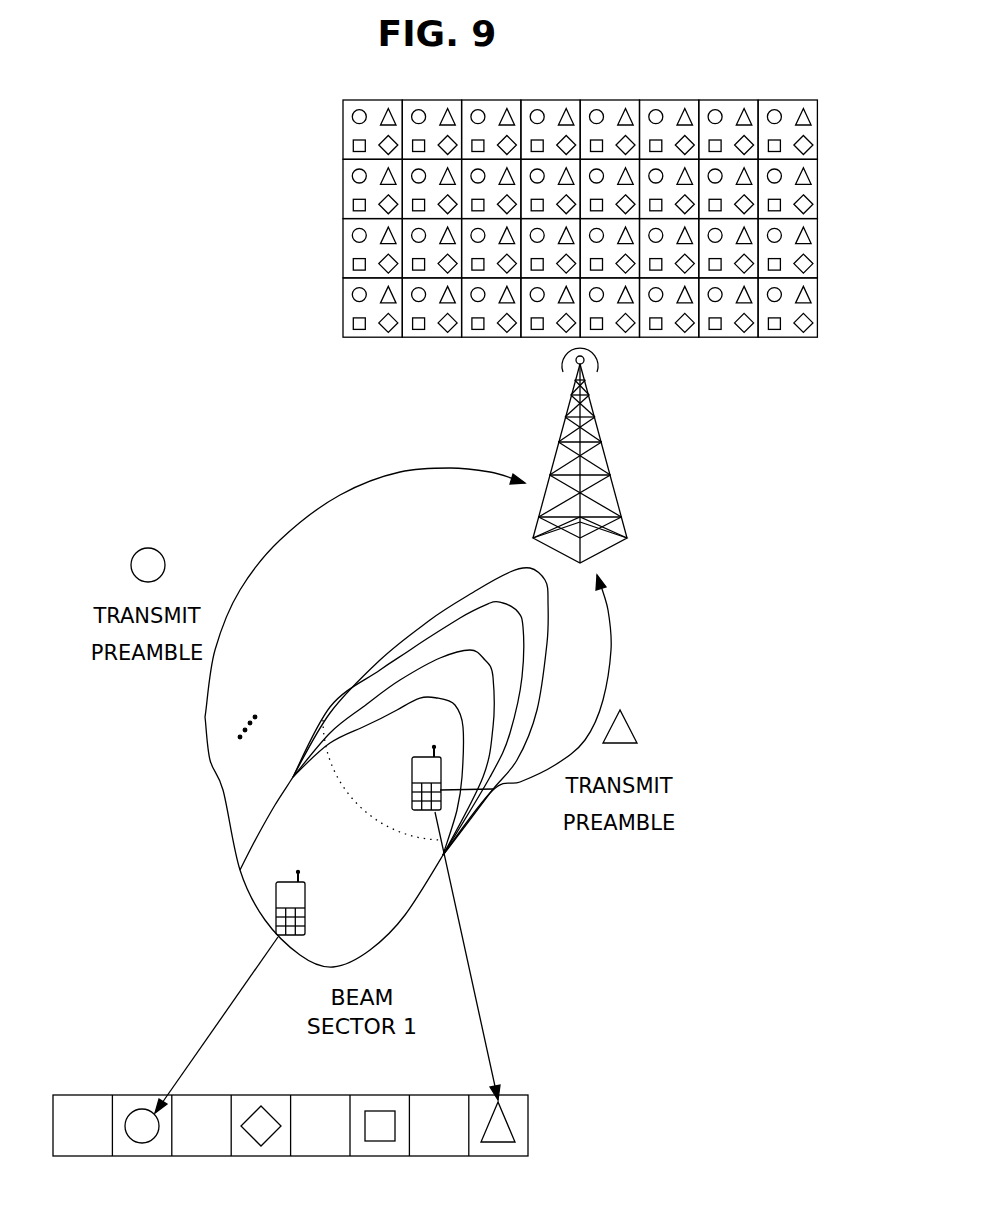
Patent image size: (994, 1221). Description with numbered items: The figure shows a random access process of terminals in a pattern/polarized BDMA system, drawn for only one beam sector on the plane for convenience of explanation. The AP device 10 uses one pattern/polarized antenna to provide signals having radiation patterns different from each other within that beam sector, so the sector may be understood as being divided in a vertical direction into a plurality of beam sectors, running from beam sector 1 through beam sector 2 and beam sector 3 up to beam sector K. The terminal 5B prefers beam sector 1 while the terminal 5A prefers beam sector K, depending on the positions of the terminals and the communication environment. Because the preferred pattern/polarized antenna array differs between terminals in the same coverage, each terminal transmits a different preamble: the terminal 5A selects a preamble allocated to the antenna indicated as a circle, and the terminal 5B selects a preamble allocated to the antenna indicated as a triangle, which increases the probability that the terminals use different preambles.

The beam sector 1 is at (485, 595).
The beam sector 2 is at (415, 652).
The beam sector 3 is at (367, 708).
The AP device 10 is at (638, 510).
The terminal 5A is at (268, 907).
The terminal 5B is at (405, 798).
The beam sector K is at (260, 880).